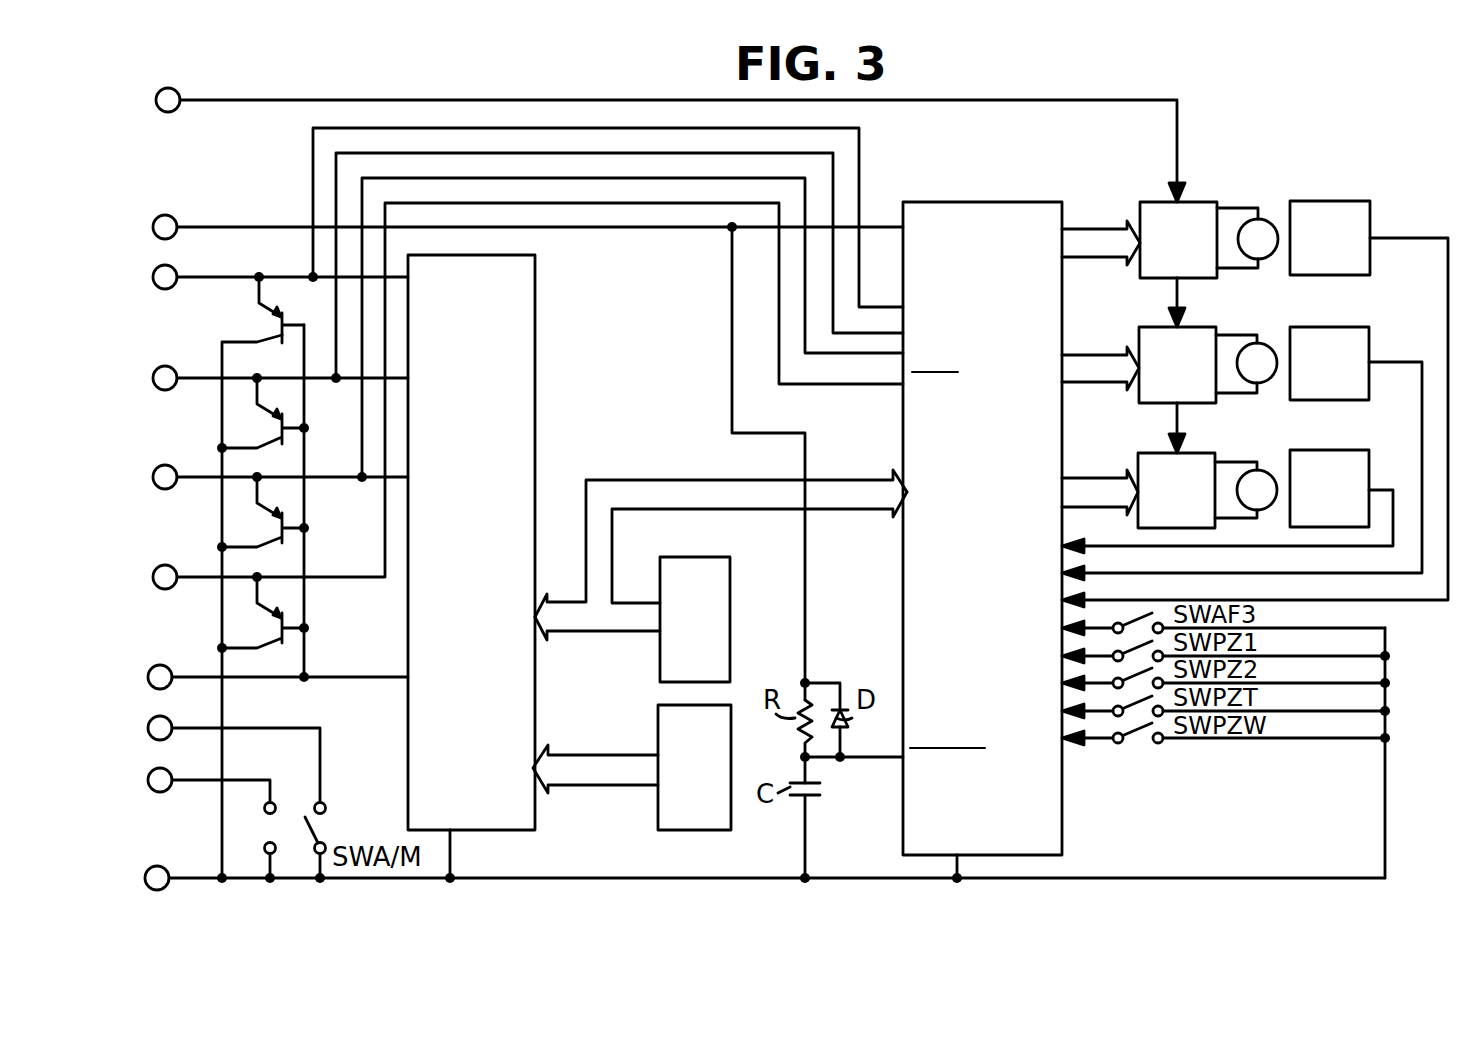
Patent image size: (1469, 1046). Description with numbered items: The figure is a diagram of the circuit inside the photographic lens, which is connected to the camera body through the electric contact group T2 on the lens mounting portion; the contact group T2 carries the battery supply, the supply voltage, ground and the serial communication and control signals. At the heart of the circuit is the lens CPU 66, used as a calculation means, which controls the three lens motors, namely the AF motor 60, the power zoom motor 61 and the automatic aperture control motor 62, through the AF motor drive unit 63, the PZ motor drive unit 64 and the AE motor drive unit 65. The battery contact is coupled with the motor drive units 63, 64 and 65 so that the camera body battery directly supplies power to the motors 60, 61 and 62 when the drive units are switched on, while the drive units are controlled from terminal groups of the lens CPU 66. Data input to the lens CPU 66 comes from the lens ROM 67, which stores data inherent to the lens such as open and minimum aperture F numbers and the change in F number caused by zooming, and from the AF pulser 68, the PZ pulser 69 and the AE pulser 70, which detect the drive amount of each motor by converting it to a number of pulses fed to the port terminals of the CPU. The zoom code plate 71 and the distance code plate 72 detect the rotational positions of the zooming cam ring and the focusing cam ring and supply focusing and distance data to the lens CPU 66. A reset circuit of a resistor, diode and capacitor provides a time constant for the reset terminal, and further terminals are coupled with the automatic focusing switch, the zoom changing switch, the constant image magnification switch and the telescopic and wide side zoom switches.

The electric contact group T2 is at (115, 224).
The AF motor 60 is at (1266, 216).
The power zoom (PZ) motor 61 is at (1264, 343).
The automatic aperture control (AE) motor 62 is at (1268, 468).
The AF motor drive unit 63 is at (1210, 200).
The PZ motor drive unit 64 is at (1216, 313).
The AE motor drive unit 65 is at (1205, 452).
The lens CPU 66 is at (1035, 201).
The lens ROM 67 is at (535, 338).
The AF pulser 68 is at (1345, 200).
The PZ pulser 69 is at (1338, 326).
The AE pulser 70 is at (1338, 450).
The zoom code plate 71 is at (730, 578).
The distance code plate 72 is at (680, 830).